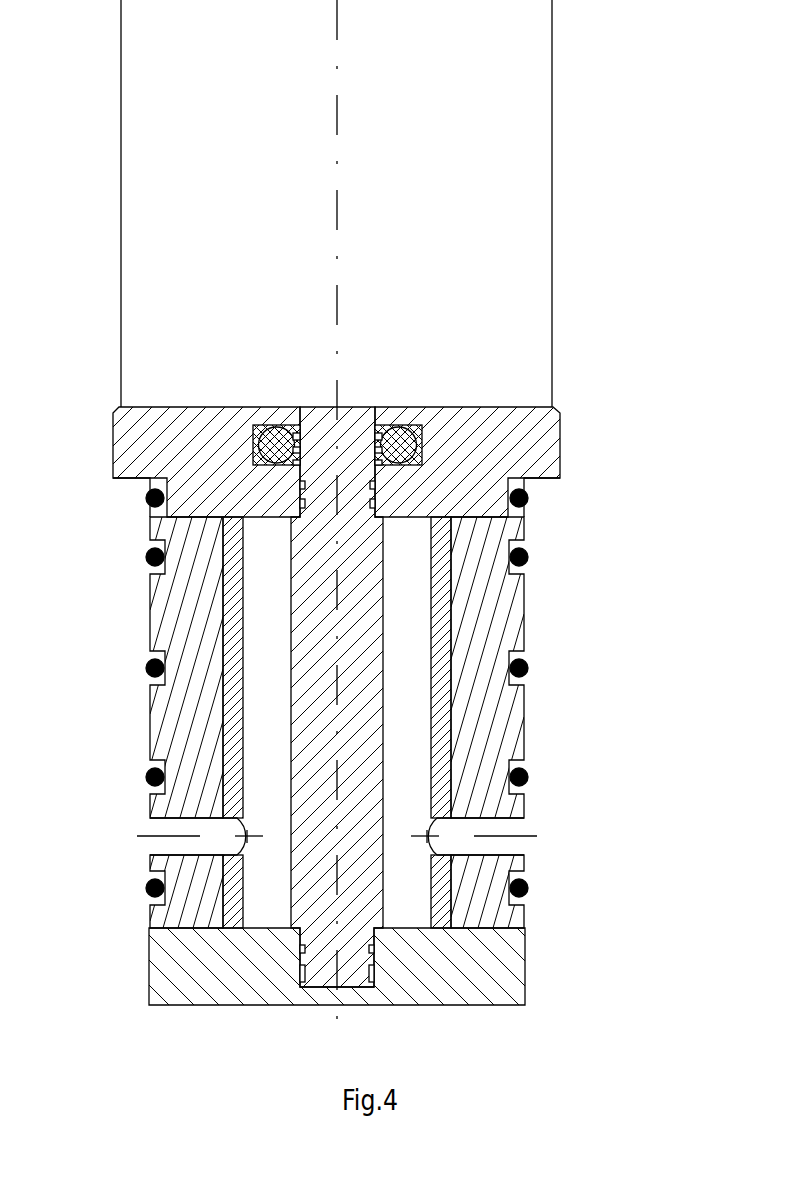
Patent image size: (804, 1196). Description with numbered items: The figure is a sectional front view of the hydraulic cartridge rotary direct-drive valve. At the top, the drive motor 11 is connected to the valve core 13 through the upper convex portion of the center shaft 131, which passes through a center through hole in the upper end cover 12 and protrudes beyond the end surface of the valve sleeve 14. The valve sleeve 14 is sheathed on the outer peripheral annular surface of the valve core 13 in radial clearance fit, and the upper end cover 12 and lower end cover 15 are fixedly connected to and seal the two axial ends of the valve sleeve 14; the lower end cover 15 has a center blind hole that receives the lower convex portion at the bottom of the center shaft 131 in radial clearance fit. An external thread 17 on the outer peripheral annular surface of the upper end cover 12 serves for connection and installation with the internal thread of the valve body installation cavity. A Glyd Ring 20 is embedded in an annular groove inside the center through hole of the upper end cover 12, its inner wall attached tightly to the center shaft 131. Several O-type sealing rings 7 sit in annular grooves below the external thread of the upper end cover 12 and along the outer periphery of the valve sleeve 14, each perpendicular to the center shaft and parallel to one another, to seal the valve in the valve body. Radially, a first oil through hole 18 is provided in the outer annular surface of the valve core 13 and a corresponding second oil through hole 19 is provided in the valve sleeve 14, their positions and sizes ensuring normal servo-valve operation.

The drive motor 11 is at (390, 203).
The upper end cover 12 is at (305, 425).
The valve core 13 is at (237, 567).
The center shaft 131 is at (479, 697).
The valve sleeve 14 is at (287, 722).
The lower end cover 15 is at (287, 957).
The external thread 17 is at (305, 495).
The first oil through hole 18 is at (156, 809).
The second oil through hole 19 is at (535, 862).
The Glyd Ring 20 is at (456, 379).
The O-type sealing ring 7 is at (403, 693).